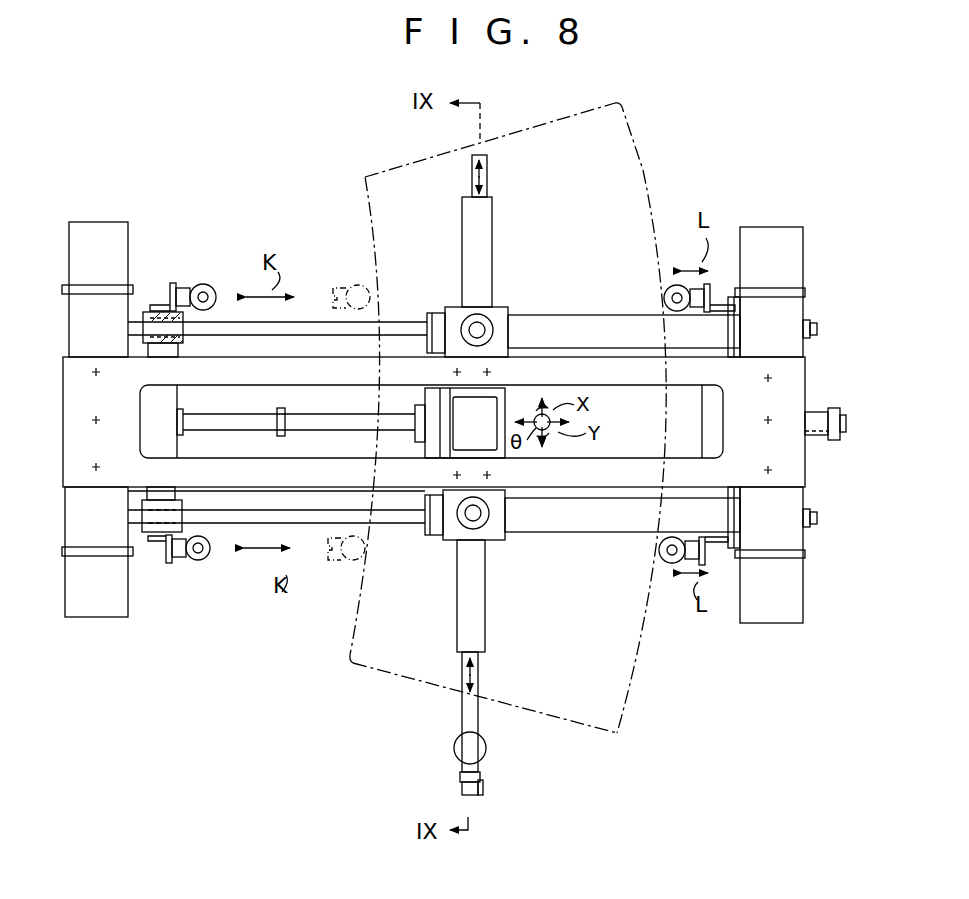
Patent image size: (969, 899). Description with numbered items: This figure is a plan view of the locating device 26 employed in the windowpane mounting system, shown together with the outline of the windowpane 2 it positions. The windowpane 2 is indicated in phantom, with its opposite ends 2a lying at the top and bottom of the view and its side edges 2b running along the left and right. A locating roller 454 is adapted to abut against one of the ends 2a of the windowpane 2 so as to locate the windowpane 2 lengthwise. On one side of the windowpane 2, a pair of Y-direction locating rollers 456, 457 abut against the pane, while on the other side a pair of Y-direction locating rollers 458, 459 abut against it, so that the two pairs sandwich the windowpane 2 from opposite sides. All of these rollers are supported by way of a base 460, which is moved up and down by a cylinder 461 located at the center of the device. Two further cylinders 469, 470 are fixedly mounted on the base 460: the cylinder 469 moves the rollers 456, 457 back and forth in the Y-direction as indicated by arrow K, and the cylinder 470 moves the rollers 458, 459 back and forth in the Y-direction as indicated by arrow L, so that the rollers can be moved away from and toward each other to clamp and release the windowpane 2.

The windowpane 2 is at (501, 415).
The opposite ends of the windowpane 2a is at (506, 136).
The side edges of window glass 2b is at (370, 244).
The locating device 26 is at (812, 238).
The locating roller 454 is at (486, 752).
The Y-direction locating roller 456 is at (205, 560).
The Y-direction locating roller 457 is at (210, 285).
The Y-direction locating roller 458 is at (660, 565).
The Y-direction locating roller 459 is at (672, 285).
The base 460 is at (572, 357).
The cylinder 461 is at (486, 440).
The cylinder 469 is at (302, 436).
The cylinder 470 is at (822, 438).